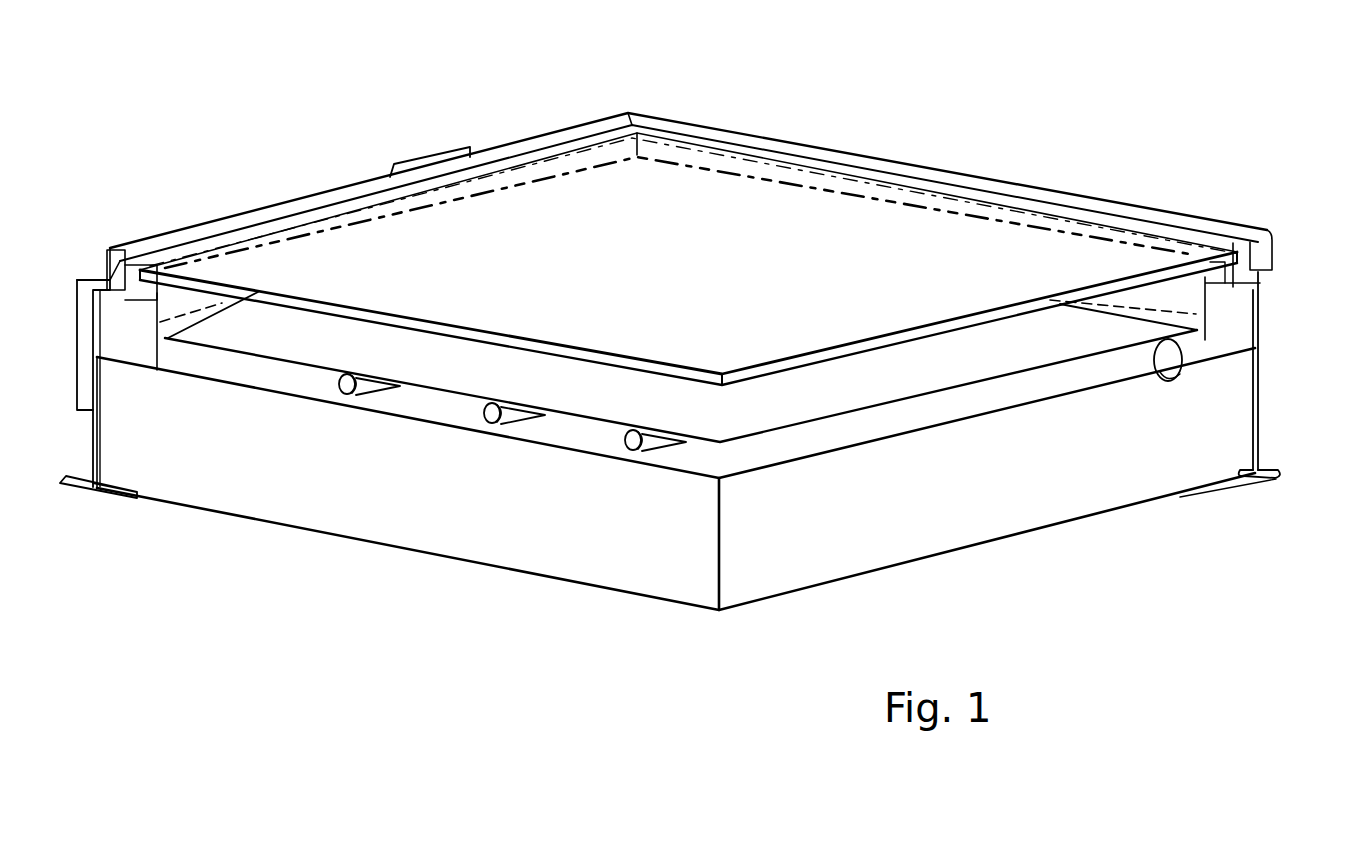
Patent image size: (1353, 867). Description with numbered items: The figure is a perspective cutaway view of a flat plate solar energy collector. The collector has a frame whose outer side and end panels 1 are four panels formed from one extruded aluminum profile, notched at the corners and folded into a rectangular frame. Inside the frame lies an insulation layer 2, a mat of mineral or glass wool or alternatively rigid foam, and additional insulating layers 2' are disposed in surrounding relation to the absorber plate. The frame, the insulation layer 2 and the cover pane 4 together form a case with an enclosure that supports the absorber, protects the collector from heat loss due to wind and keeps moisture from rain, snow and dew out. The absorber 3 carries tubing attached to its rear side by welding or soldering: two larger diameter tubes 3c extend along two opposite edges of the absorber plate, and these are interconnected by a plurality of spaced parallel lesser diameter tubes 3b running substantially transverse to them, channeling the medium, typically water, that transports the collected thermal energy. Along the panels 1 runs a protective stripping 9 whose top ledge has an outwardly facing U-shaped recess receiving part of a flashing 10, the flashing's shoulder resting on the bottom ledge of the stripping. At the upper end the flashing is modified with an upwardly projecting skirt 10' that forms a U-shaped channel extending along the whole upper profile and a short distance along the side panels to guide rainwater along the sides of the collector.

The side- and end panels 1 is at (1255, 400).
The insulation layer 2 is at (676, 479).
The additional insulating layers 2' is at (1271, 291).
The liner panel 3 is at (300, 340).
The lesser diameter tubes 3b is at (633, 444).
The larger diameter tubes 3c is at (1166, 365).
The cover pane 4 is at (793, 228).
The protective stripping 9 is at (498, 157).
The flashing 10 is at (108, 303).
The upwardly projecting skirt 10' is at (691, 178).